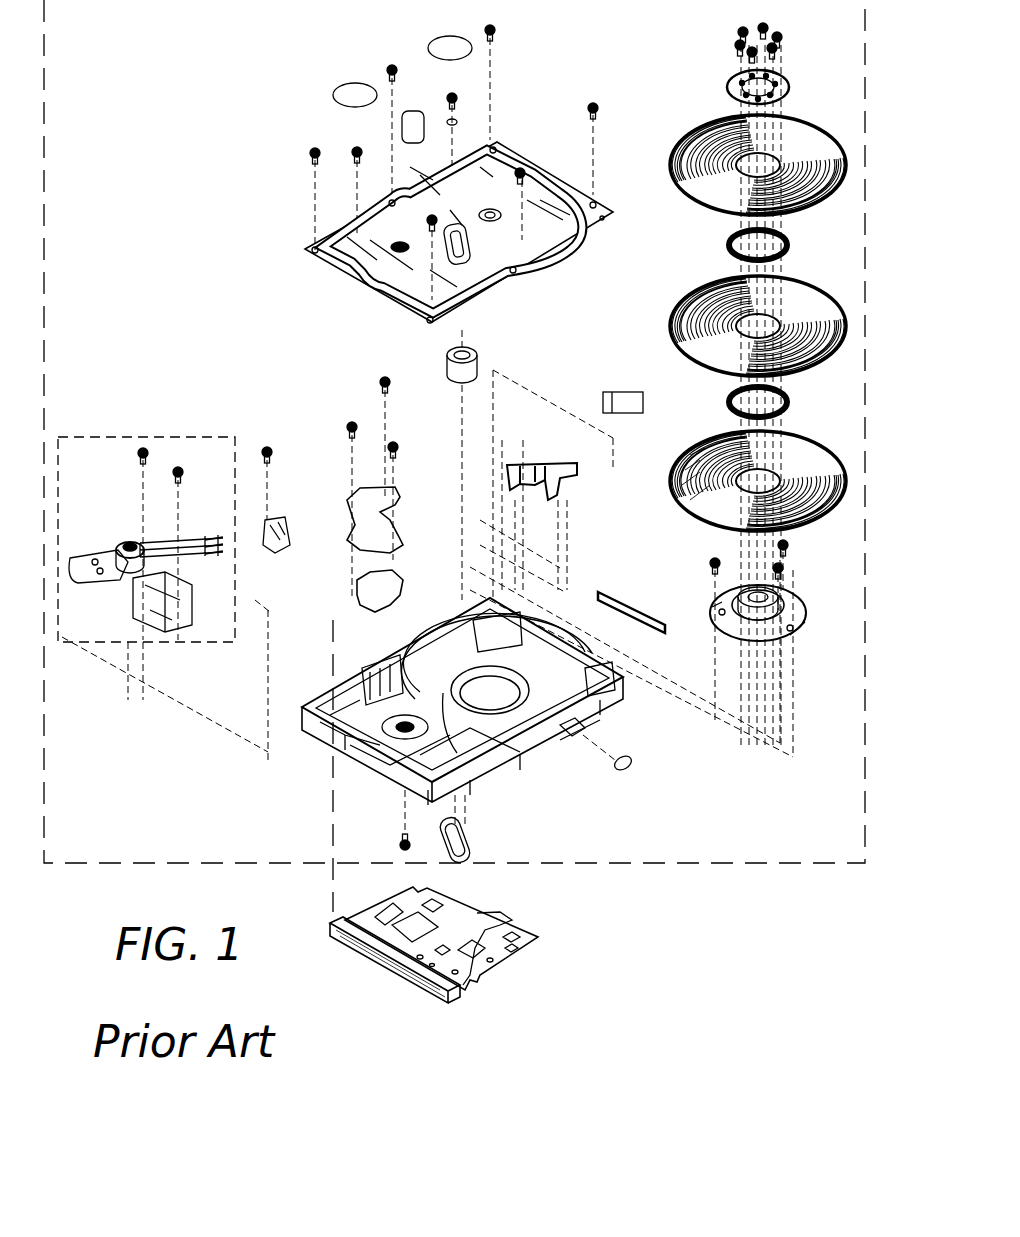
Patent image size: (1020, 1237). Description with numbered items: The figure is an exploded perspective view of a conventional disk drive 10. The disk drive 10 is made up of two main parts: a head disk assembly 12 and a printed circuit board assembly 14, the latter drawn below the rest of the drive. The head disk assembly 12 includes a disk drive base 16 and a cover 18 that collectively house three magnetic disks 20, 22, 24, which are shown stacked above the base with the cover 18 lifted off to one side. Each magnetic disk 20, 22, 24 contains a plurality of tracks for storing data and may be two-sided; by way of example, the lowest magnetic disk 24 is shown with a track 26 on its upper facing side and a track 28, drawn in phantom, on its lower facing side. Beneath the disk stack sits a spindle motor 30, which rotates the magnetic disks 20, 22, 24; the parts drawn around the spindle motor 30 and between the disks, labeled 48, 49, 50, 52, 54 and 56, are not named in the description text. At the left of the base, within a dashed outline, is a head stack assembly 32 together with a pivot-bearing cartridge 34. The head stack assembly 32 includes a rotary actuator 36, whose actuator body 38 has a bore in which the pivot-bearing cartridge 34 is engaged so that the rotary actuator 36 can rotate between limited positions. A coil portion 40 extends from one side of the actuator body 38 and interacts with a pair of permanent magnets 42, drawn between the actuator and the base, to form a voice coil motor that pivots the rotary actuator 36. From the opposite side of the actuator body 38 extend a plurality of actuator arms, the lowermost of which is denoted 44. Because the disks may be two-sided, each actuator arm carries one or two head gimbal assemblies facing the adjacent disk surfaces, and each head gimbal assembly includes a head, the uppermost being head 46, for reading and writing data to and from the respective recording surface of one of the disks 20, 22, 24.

The disk drive 10 is at (721, 892).
The head disk assembly 12 is at (600, 866).
The printed circuit board assembly 14 is at (485, 972).
The disk drive base 16 is at (513, 768).
The cover 18 is at (583, 237).
The magnetic disk 20 is at (700, 138).
The magnetic disk 22 is at (700, 298).
The magnetic disk 24 is at (746, 485).
The track 26 is at (805, 510).
The track 28 is at (692, 448).
The spindle motor 30 is at (743, 610).
The head stack assembly 32 is at (146, 518).
The pivot-bearing cartridge 34 is at (135, 543).
The rotary actuator 36 is at (128, 545).
The actuator body 38 is at (120, 550).
The coil portion 40 is at (88, 580).
The permanent magnets 42 is at (350, 515).
The actuator arm 44 is at (170, 565).
The head 46 is at (218, 538).
The motor flange 48 is at (720, 616).
The spindle hub 49 is at (758, 630).
The motor base 50 is at (805, 617).
The disk spacer 52 is at (728, 402).
The disk spacer 54 is at (728, 245).
The disk clamp 56 is at (735, 80).